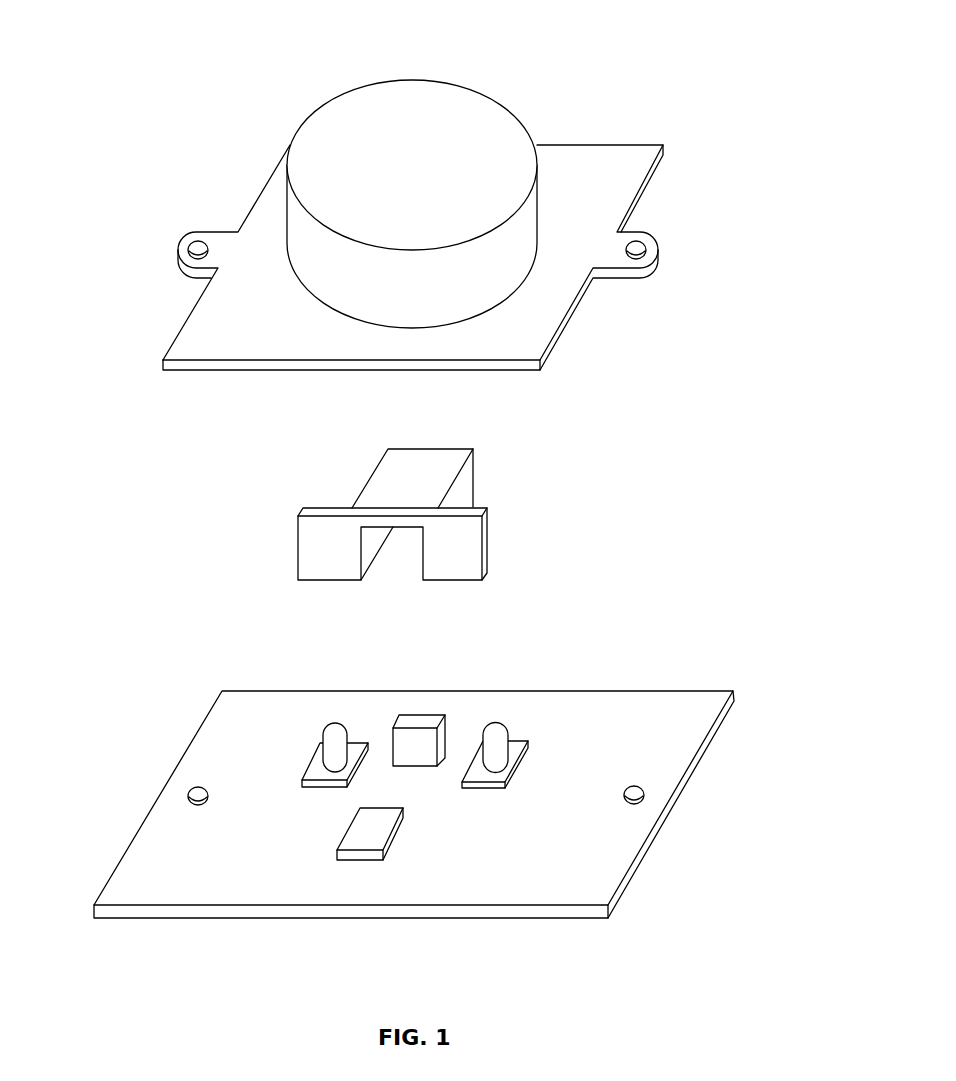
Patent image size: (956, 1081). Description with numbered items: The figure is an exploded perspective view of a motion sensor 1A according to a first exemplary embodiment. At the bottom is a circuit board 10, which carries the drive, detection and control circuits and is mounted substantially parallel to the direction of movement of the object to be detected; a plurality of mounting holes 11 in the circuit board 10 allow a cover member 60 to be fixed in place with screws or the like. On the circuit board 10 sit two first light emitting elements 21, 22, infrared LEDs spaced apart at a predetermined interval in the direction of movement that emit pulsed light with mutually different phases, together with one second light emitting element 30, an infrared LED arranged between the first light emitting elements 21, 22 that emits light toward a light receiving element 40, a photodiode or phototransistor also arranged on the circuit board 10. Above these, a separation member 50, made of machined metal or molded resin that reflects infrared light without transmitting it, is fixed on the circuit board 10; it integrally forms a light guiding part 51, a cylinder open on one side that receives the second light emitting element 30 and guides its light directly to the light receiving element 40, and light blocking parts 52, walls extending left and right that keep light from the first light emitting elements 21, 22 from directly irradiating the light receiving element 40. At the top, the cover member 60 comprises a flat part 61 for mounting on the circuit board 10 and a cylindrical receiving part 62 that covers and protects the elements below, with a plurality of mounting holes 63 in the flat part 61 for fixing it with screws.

The motion sensor 1A is at (440, 495).
The circuit board 10 is at (414, 800).
The mounting holes 11 is at (193, 795).
The first light emitting element 21 is at (330, 728).
The first light emitting element 22 is at (503, 727).
The second light emitting element 30 is at (417, 720).
The light receiving element 40 is at (358, 840).
The separation member 50 is at (427, 503).
The light guiding part 51 is at (395, 481).
The light blocking parts 52 is at (325, 547).
The cover member 60 is at (420, 195).
The flat part 61 is at (235, 327).
The cylindrical receiving part 62 is at (328, 135).
The mounting holes 63 is at (196, 243).